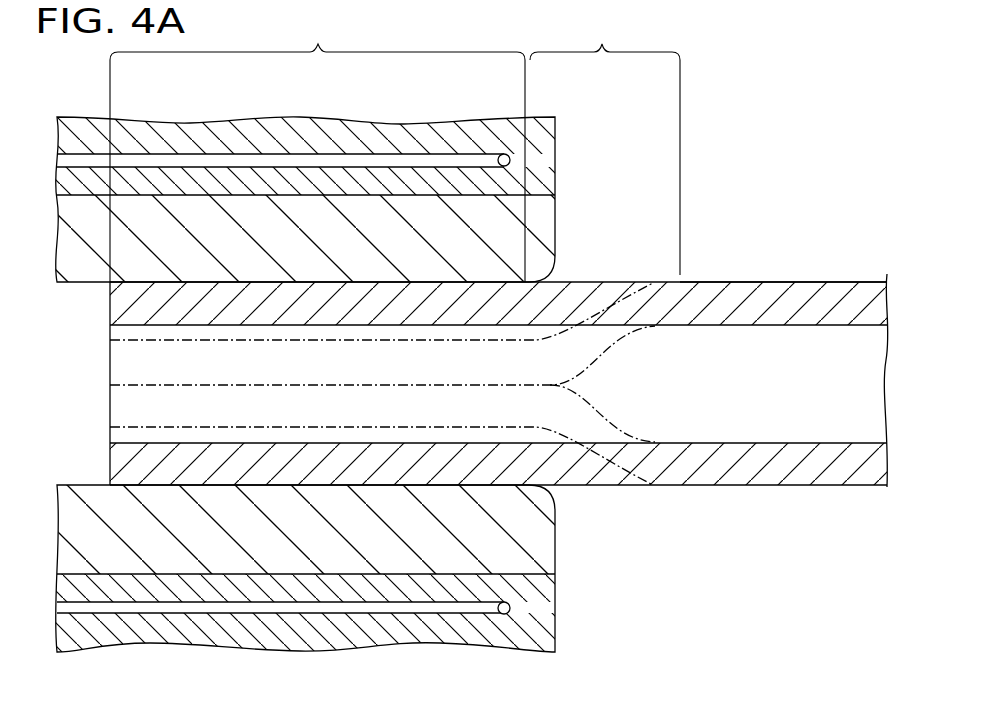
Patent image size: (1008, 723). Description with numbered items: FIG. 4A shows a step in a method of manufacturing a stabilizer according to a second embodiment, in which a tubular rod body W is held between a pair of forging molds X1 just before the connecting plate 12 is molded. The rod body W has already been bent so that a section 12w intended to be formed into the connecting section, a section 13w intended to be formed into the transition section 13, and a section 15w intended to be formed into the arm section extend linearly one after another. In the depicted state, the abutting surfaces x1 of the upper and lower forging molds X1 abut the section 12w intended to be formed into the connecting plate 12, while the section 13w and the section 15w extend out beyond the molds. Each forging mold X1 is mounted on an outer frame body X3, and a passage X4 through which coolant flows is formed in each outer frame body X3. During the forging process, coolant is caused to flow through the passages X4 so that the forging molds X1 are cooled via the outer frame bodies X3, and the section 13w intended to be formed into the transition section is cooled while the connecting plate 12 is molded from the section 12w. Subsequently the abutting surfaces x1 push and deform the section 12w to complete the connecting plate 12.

The rod body W is at (841, 282).
The connecting plate 12 is at (359, 338).
The transition section 13 is at (582, 300).
The section intended to be formed into the connecting section 12w is at (317, 145).
The section intended to be formed into the transition section 13w is at (605, 142).
The section intended to be formed into the arm section 15w is at (772, 282).
The abutting surface x1 is at (148, 480).
The forging mold X1 is at (556, 556).
The outer frame body X3 is at (245, 636).
The passage X4 is at (183, 612).